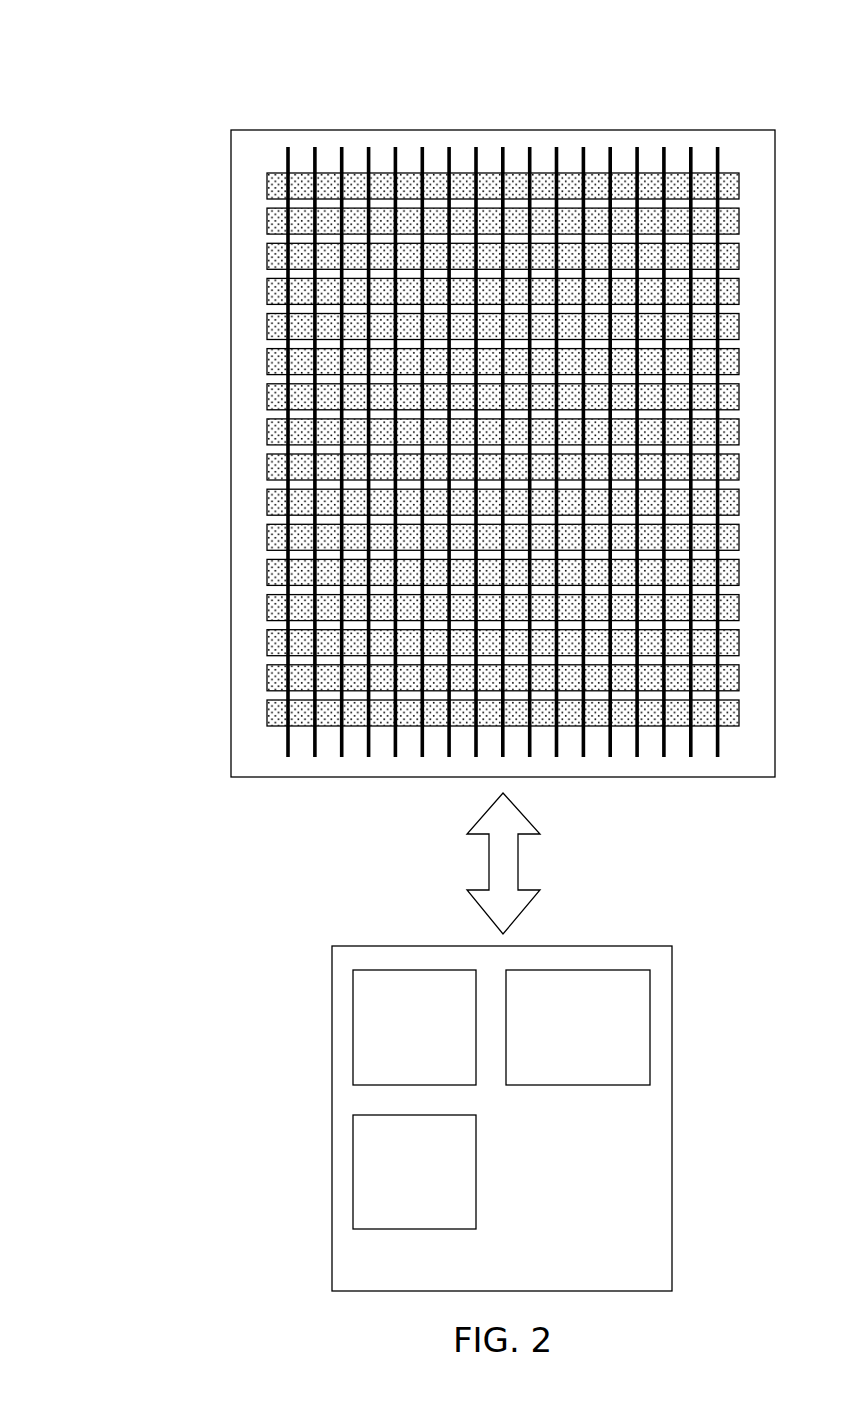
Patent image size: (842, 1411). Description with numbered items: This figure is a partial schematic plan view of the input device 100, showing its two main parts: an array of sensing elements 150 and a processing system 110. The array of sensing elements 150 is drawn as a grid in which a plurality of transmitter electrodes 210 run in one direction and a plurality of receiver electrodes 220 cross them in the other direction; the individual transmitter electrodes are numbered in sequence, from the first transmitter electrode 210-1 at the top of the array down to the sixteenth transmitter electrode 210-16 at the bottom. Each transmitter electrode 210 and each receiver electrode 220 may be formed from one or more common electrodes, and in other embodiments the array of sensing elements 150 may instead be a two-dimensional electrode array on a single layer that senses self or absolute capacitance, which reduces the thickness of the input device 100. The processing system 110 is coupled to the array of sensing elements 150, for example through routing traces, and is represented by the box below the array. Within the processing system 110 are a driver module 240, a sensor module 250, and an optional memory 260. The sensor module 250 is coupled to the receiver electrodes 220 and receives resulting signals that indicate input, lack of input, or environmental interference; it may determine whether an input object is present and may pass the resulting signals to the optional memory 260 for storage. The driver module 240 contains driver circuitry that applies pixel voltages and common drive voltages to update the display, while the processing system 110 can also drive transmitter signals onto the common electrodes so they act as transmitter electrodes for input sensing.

The input device 100 is at (192, 52).
The array of sensing elements 150 is at (356, 155).
The transmitter electrodes 210 is at (93, 735).
The first transmitter electrode 210-1 is at (267, 182).
The sixteenth transmitter electrode 210-16 is at (267, 714).
The receiver electrodes 220 is at (725, 113).
The processing system 110 is at (628, 1268).
The driver module 240 is at (394, 1063).
The sensor module 250 is at (394, 1205).
The optional memory 260 is at (557, 1063).